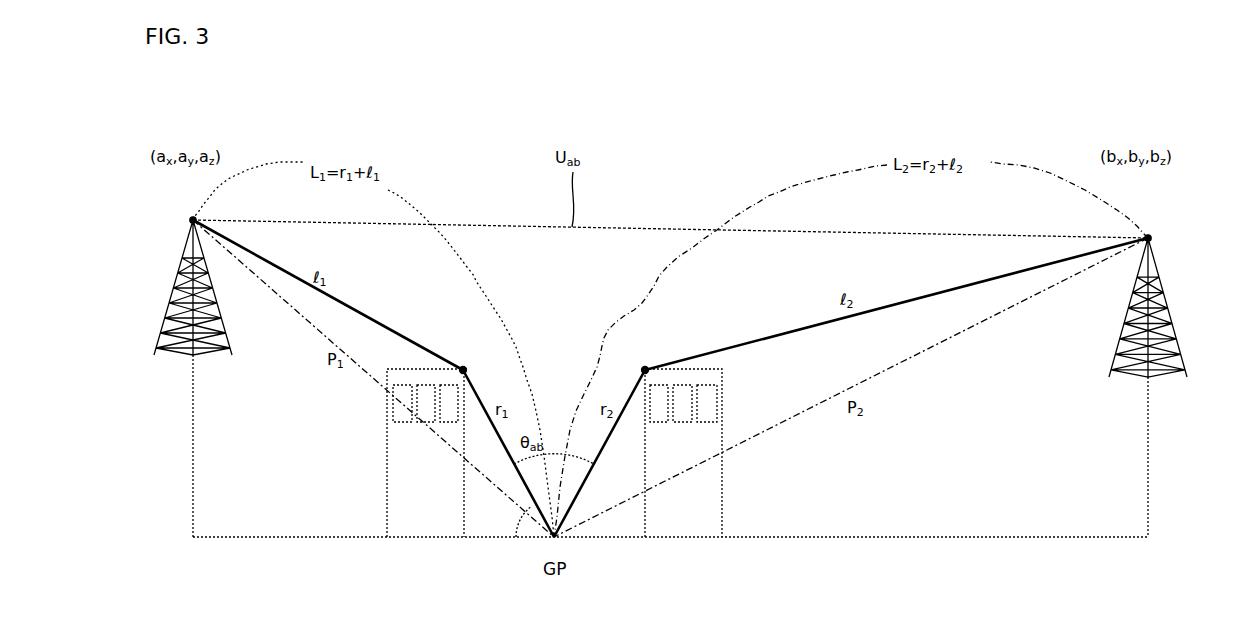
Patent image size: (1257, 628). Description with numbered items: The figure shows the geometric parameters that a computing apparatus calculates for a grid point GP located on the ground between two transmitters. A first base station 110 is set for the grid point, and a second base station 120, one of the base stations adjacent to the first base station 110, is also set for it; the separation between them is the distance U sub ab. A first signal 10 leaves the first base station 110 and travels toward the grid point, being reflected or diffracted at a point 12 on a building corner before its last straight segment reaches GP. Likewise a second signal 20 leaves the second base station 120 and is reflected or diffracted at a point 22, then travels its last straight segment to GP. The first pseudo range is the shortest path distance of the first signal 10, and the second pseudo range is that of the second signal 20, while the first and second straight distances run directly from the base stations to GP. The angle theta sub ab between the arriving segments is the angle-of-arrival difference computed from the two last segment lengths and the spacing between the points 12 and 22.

The first signal 10 is at (357, 308).
The point 12 is at (463, 368).
The second signal 20 is at (790, 331).
The point 22 is at (645, 368).
The first base station 110 is at (170, 297).
The second base station 120 is at (1163, 315).